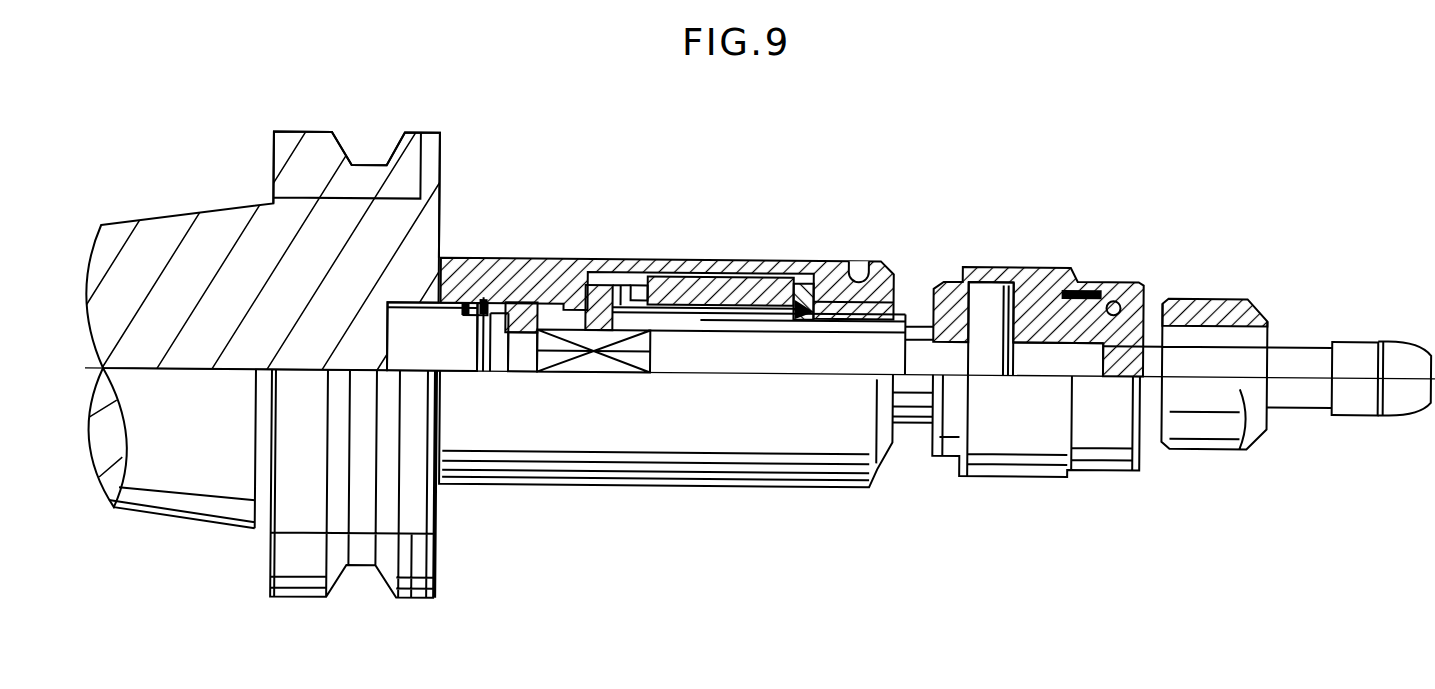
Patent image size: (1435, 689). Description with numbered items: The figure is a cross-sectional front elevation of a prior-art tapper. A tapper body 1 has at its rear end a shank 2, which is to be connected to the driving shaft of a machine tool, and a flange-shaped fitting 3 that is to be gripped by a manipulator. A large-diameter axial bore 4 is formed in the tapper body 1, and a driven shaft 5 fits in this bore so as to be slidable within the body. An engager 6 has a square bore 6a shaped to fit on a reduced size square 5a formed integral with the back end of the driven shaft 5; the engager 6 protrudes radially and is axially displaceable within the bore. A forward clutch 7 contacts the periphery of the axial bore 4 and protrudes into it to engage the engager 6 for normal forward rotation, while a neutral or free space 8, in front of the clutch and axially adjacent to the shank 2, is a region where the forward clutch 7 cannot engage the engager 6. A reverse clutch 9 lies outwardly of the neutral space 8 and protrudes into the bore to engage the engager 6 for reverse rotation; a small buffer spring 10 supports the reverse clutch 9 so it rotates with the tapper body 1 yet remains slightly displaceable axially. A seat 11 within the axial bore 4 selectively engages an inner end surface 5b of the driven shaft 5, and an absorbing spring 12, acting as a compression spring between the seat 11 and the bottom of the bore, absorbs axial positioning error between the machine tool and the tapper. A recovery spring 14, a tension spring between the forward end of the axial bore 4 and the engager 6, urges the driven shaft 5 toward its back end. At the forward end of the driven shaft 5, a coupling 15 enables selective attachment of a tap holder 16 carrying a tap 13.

The tapper body 1 is at (500, 275).
The shank 2 is at (157, 237).
The flange-shaped fitting 3 is at (345, 133).
The axial bore 4 is at (568, 300).
The driven shaft 5 is at (867, 342).
The reduced size square 5a is at (605, 350).
The inner end surface 5b is at (484, 330).
The engager 6 is at (598, 283).
The square bore 6a is at (577, 340).
The forward clutch 7 is at (626, 283).
The neutral or free space 8 is at (652, 282).
The reverse clutch 9 is at (693, 287).
The buffer spring 10 is at (800, 296).
The seat 11 is at (470, 330).
The absorbing spring 12 is at (457, 298).
The tap 13 is at (1350, 340).
The recovery spring 14 is at (803, 322).
The coupling 15 is at (1005, 268).
The tap holder 16 is at (1190, 300).